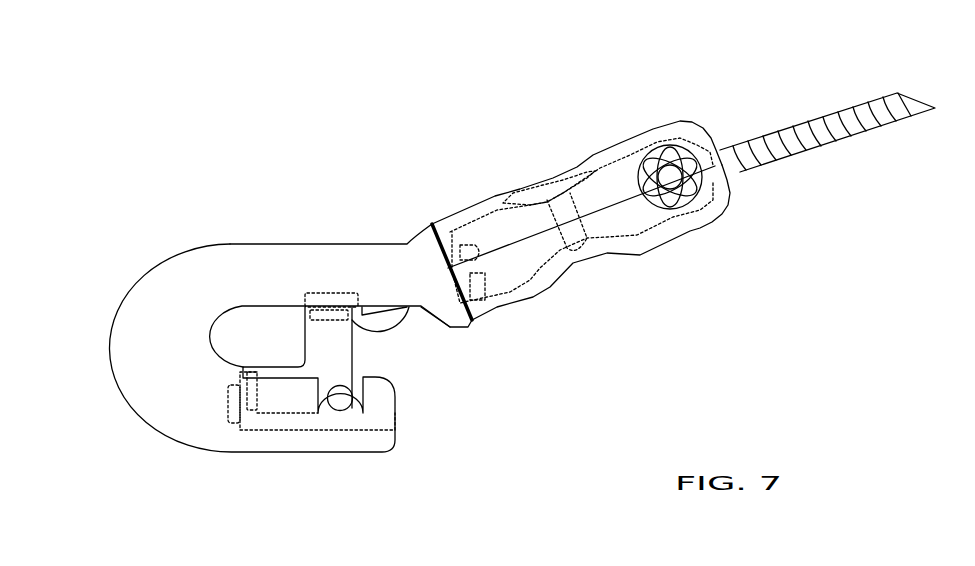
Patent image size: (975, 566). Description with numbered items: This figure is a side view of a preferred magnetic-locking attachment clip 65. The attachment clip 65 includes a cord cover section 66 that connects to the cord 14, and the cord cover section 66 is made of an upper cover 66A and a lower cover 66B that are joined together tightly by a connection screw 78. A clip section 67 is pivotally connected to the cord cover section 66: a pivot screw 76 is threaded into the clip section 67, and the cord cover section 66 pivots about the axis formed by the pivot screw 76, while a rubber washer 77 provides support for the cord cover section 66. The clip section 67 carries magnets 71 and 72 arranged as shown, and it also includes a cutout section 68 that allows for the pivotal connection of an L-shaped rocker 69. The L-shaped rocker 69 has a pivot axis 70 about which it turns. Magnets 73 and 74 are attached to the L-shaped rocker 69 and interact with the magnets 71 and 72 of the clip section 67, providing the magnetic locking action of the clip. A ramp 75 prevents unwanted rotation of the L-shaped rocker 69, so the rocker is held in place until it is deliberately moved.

The cord 14 is at (826, 112).
The magnetic-locking attachment clip 65 is at (239, 210).
The cord cover section 66 is at (630, 132).
The upper cover 66A is at (675, 122).
The lower cover 66B is at (693, 228).
The clip section 67 is at (197, 446).
The cutout section 68 is at (300, 432).
The L-shaped rocker 69 is at (357, 355).
The pivot axis 70 is at (348, 407).
The magnet 71 is at (323, 294).
The magnet 72 is at (227, 407).
The magnet 73 is at (407, 307).
The magnet 74 is at (250, 408).
The ramp 75 is at (370, 308).
The pivot screw 76 is at (485, 262).
The rubber washer 77 is at (480, 285).
The connection screw 78 is at (543, 188).